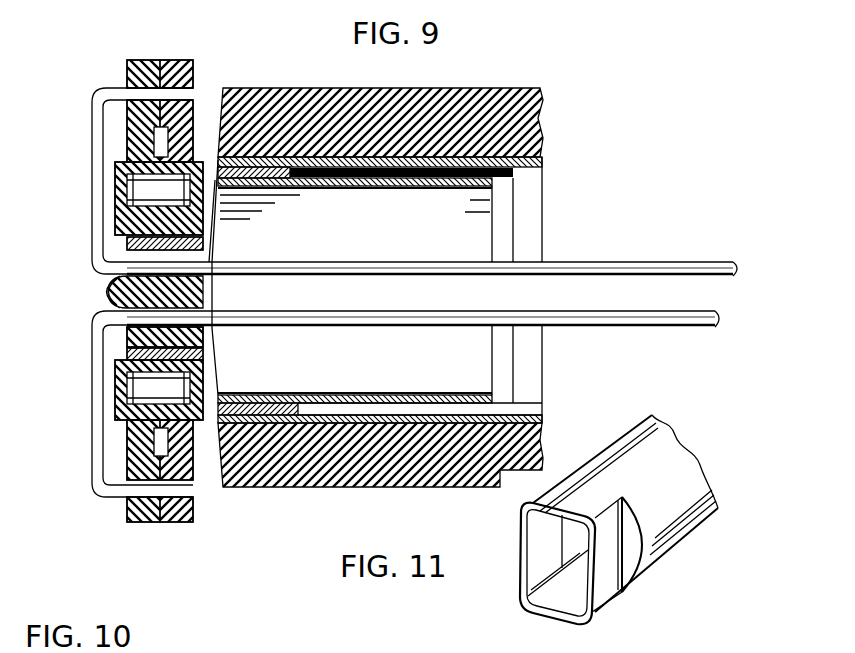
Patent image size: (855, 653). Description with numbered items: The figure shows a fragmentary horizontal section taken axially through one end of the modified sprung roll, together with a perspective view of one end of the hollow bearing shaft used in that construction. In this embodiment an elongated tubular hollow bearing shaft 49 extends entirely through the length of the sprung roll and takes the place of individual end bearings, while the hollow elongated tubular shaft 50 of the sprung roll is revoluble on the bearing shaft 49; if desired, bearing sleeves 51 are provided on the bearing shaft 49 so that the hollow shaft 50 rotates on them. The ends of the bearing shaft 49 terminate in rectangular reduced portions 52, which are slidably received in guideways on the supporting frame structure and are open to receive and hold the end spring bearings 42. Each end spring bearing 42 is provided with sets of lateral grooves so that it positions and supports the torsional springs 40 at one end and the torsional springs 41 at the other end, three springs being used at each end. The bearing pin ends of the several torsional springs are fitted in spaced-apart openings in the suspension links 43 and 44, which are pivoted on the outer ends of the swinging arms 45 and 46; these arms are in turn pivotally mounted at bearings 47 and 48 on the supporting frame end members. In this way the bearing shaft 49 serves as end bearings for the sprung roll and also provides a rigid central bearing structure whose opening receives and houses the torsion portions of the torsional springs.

In FIG. 9, the torsional springs 40 is at (95, 160).
In FIG. 9, the torsional springs 41 is at (100, 297).
In FIG. 9, the end spring bearing 42 is at (127, 333).
In FIG. 9, the suspension link 43 is at (162, 59).
In FIG. 9, the suspension link 44 is at (160, 520).
In FIG. 9, the swinging arm 45 is at (130, 130).
In FIG. 9, the swinging arm 46 is at (133, 447).
In FIG. 9, the bearing 47 is at (120, 200).
In FIG. 9, the bearing 48 is at (120, 393).
In FIG. 9, the elongated tubular hollow bearing shaft 49 is at (492, 398).
In FIG. 11, the elongated tubular hollow bearing shaft 49 is at (675, 455).
In FIG. 9, the hollow elongated tubular shaft 50 is at (512, 163).
In FIG. 9, the bearing sleeve 51 is at (250, 405).
In FIG. 9, the rectangular reduced portion 52 is at (107, 243).
In FIG. 11, the rectangular reduced portion 52 is at (612, 588).